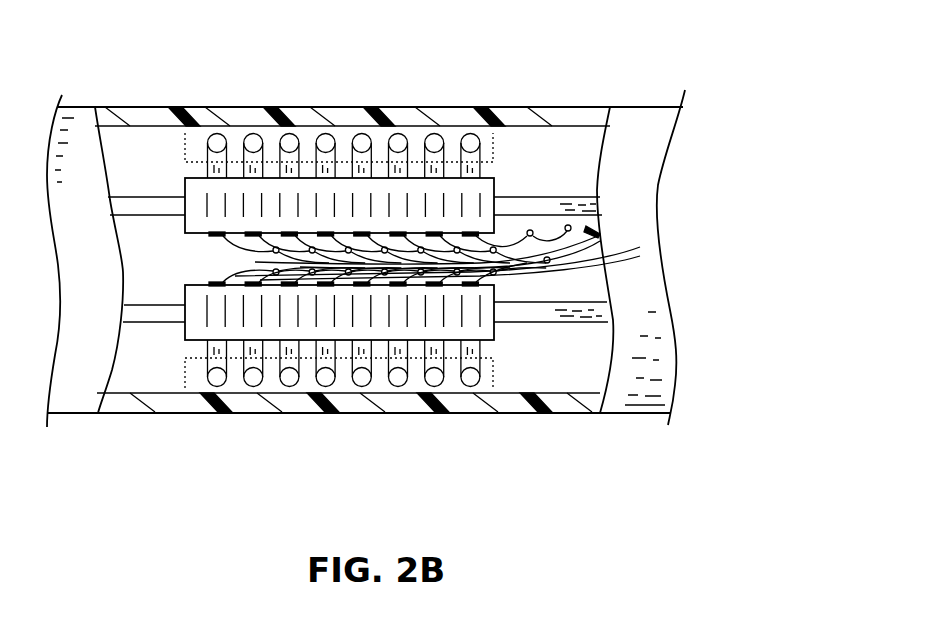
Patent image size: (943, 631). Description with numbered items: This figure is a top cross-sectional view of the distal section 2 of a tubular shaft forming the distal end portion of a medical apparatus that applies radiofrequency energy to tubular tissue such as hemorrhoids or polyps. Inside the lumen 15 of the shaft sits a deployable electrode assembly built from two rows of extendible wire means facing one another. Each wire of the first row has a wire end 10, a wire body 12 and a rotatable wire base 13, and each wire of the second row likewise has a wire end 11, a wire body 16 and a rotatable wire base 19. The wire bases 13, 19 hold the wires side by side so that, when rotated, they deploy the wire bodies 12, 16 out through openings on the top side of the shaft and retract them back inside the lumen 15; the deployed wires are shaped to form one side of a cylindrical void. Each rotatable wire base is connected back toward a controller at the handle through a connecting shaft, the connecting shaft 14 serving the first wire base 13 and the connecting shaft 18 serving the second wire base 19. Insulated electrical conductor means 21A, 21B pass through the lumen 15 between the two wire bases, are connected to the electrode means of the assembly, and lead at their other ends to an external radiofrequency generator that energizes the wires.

The distal section 2 is at (540, 107).
The wire end 10 is at (218, 136).
The wire end 11 is at (200, 413).
The wire body 12 is at (308, 137).
The wire base 13 is at (417, 178).
The connecting shaft 14 is at (130, 197).
The lumen 15 is at (570, 367).
The wire body 16 is at (317, 370).
The connecting shaft 18 is at (142, 327).
The wire base 19 is at (590, 256).
The insulated electrical conductor means 21A is at (597, 237).
The insulated electrical conductor means 21B is at (600, 250).